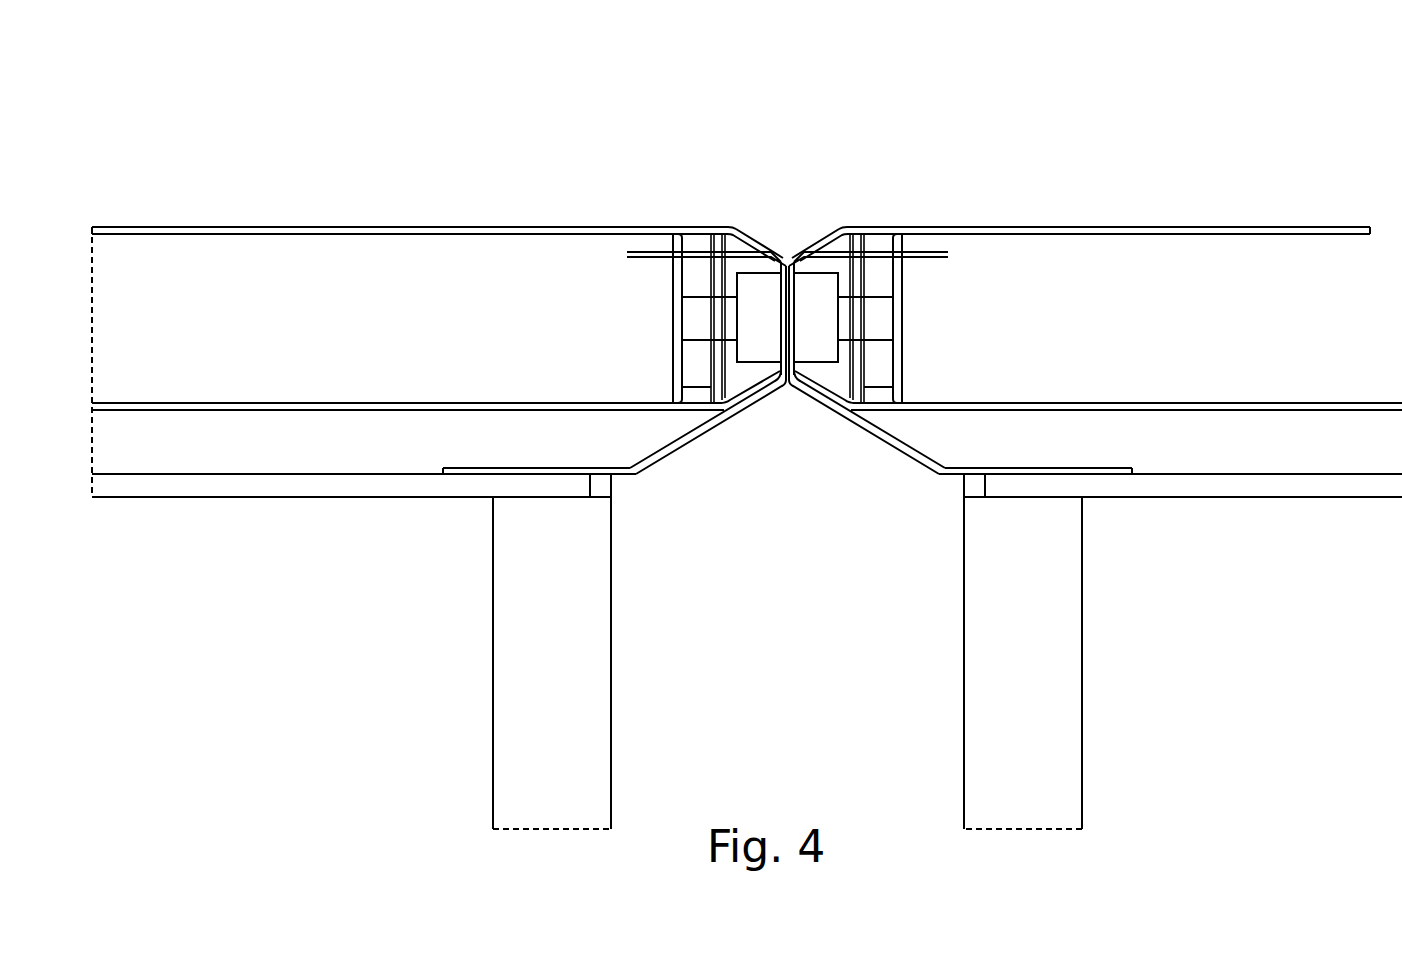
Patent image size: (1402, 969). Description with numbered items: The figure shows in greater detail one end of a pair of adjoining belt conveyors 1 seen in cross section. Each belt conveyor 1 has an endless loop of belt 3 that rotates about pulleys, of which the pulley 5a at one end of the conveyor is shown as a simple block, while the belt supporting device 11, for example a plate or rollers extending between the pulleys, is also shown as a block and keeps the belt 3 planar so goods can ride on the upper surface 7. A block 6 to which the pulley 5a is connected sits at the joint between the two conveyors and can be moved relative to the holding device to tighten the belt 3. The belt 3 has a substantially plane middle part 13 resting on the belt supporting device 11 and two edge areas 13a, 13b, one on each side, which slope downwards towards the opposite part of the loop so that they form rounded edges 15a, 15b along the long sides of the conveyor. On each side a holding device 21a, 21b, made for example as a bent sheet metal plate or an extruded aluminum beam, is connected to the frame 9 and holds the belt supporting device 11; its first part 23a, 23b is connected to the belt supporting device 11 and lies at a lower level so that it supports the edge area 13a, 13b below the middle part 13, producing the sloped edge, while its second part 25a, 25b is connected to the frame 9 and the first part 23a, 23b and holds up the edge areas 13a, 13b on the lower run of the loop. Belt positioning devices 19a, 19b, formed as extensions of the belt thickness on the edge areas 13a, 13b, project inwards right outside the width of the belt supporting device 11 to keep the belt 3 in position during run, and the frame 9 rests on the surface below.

The belt conveyor 1 is at (355, 138).
The belt 3 is at (523, 233).
The pulley 5a is at (612, 270).
The block 6 is at (800, 256).
The upper surface 7 is at (450, 226).
The frame 9 is at (611, 659).
The belt supporting device 11 is at (1220, 245).
The middle part 13 is at (302, 226).
The edge area 13a is at (842, 223).
The edge area 13b is at (735, 223).
The rounded edge 15a is at (812, 295).
The rounded edge 15b is at (765, 295).
The belt positioning device 19a is at (880, 245).
The belt positioning device 19b is at (698, 242).
The holding device 21a is at (815, 428).
The holding device 21b is at (760, 428).
The first part 23a is at (833, 222).
The first part 23b is at (742, 220).
The second part 25a is at (895, 440).
The second part 25b is at (680, 440).